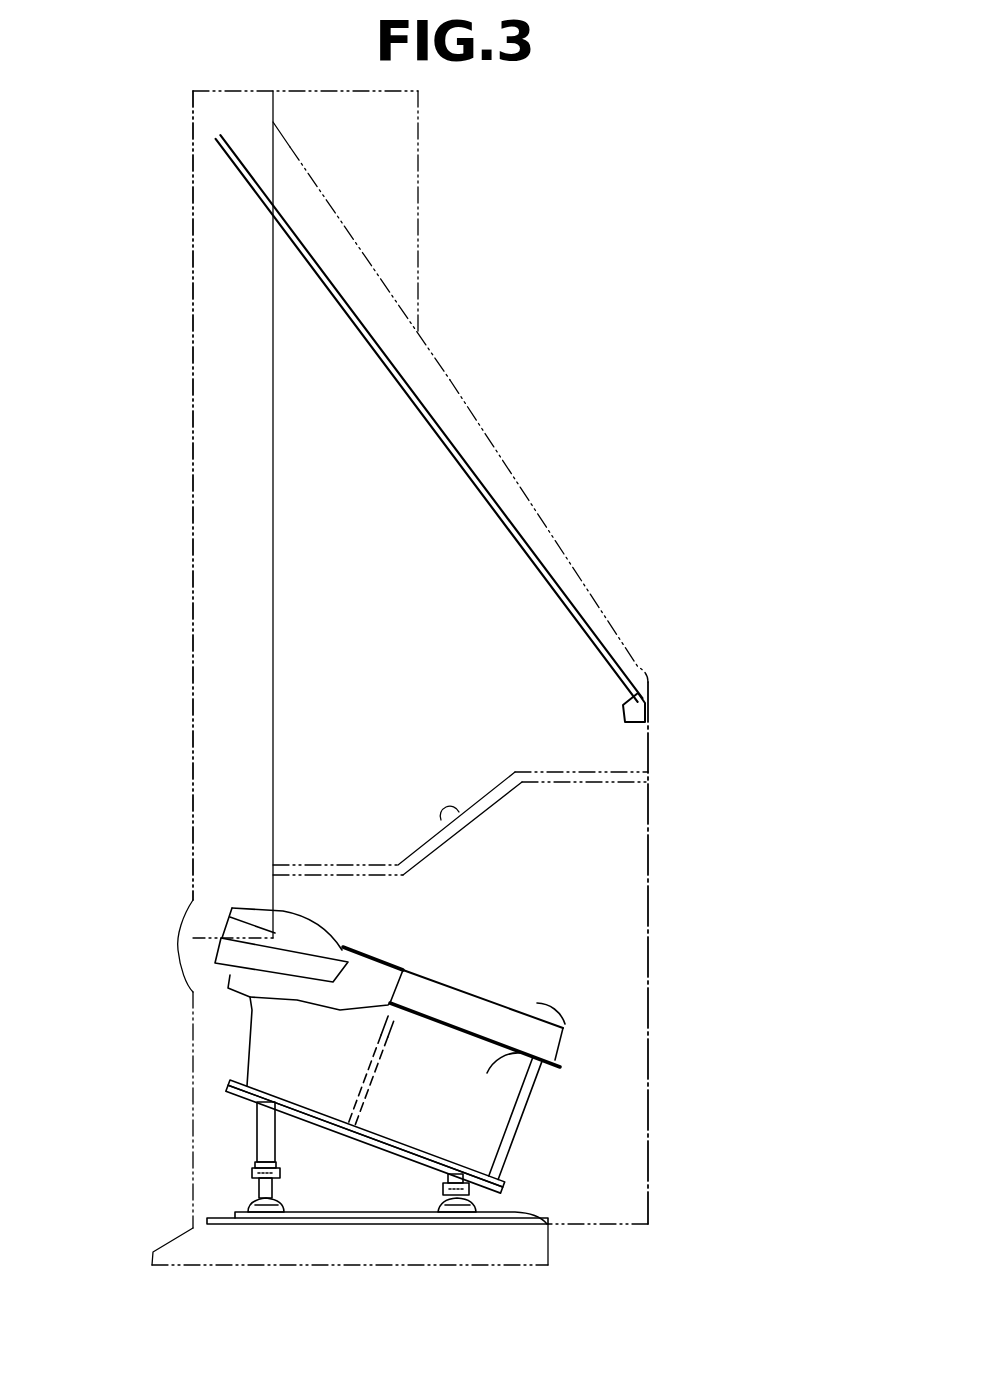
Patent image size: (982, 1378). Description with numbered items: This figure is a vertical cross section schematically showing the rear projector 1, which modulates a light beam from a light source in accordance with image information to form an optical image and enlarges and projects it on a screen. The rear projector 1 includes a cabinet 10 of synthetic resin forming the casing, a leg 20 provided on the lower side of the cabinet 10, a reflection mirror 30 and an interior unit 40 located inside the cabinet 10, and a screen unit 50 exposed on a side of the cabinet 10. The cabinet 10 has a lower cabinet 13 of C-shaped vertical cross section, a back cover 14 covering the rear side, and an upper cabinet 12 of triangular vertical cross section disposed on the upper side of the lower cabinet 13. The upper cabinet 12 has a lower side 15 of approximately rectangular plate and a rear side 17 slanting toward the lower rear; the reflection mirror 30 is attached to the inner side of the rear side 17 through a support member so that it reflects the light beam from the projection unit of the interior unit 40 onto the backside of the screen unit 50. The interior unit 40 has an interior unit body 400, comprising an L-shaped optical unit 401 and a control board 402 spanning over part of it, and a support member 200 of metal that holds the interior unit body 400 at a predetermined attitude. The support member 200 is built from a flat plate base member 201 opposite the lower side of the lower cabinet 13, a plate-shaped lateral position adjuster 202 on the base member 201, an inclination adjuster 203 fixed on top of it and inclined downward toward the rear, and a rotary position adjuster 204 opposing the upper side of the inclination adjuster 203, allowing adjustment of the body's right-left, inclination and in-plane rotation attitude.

The rear projector 1 is at (620, 260).
The cabinet 10 is at (648, 913).
The upper cabinet 12 is at (568, 552).
The lower cabinet 13 is at (648, 850).
The back cover 14 is at (737, 953).
The lower side 15 is at (470, 820).
The rear side 17 is at (450, 380).
The leg 20 is at (307, 1267).
The reflection mirror 30 is at (490, 500).
The interior unit 40 is at (547, 1080).
The screen unit 50 is at (190, 408).
The interior unit body 400 is at (727, 983).
The optical unit 401 is at (528, 1050).
The control board 402 is at (540, 1022).
The support member 200 is at (730, 1157).
The base member 201 is at (523, 1222).
The lateral position adjuster 202 is at (513, 1212).
The inclination adjuster 203 is at (503, 1200).
The rotary position adjuster 204 is at (503, 1180).